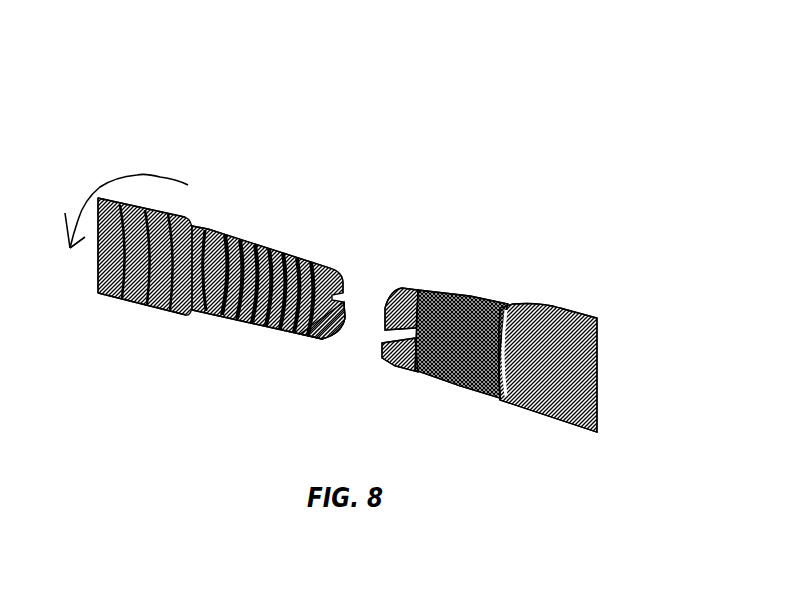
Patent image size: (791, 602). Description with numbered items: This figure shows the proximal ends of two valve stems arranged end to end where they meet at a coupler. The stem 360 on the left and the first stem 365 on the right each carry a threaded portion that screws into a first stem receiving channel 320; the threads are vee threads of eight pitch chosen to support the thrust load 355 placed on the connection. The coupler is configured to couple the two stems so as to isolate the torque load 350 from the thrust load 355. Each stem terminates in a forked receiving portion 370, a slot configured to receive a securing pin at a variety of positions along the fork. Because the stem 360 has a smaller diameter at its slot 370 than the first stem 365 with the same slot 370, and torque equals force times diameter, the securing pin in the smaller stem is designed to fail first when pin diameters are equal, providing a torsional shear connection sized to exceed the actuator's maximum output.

The first stem receiving channel 320 is at (282, 240).
The torque load 350 is at (126, 194).
The thrust load 355 is at (365, 318).
The stem 360 is at (192, 210).
The first stem 365 is at (580, 310).
The forked receiving portion 370 is at (285, 330).